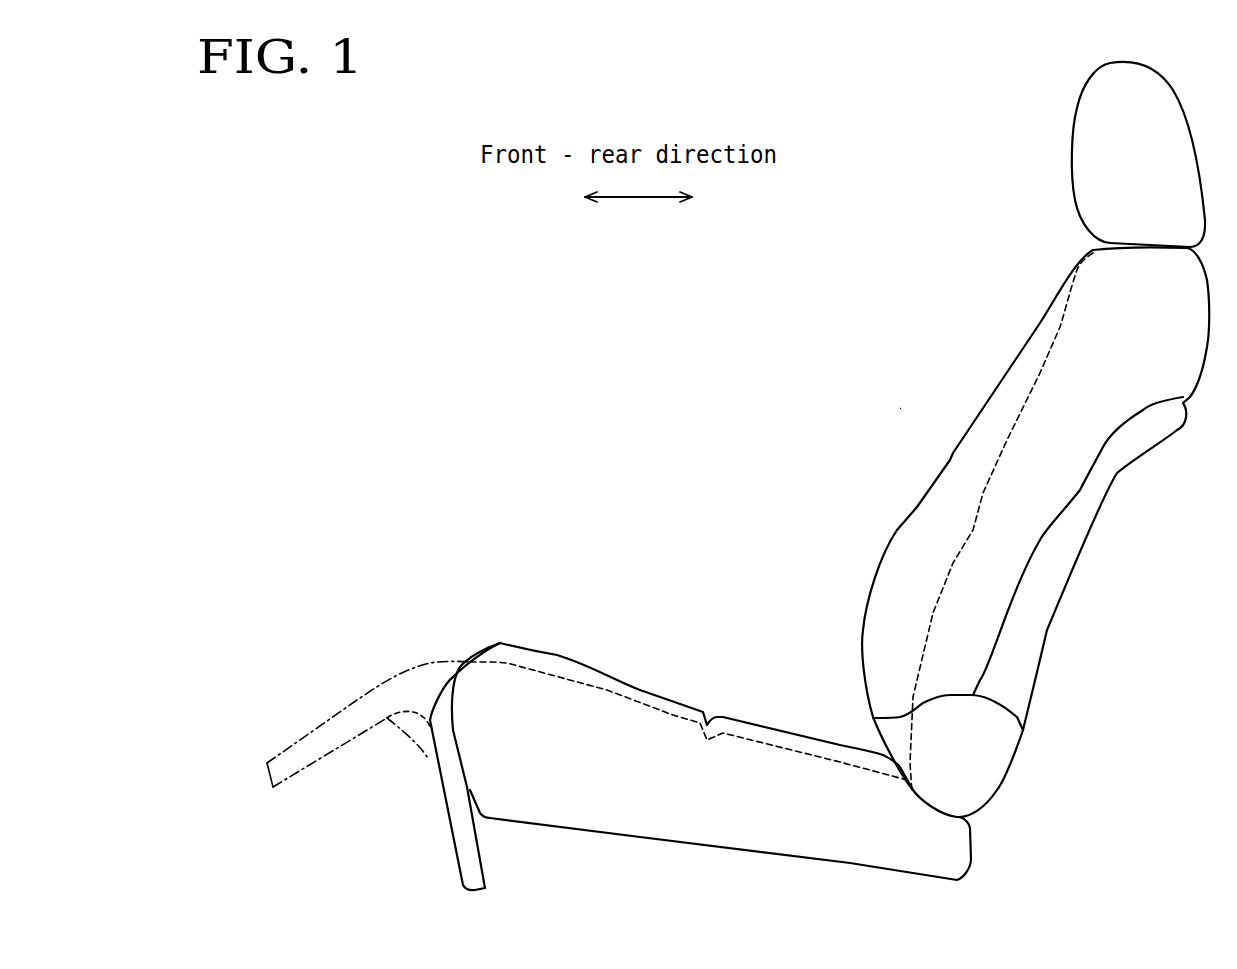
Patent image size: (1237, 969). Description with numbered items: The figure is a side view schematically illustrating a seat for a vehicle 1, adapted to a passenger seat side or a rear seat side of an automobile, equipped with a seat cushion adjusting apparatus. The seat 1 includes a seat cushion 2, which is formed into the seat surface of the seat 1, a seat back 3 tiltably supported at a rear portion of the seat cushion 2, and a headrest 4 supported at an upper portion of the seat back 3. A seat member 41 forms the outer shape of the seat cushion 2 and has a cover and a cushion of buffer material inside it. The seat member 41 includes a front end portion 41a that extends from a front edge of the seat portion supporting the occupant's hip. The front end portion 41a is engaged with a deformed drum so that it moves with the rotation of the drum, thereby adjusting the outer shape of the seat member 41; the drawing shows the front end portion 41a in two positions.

The seat for a vehicle 1 is at (900, 408).
The seat cushion 2 is at (678, 707).
The seat back 3 is at (930, 510).
The headrest 4 is at (1072, 170).
The seat member 41 is at (558, 660).
The front end portion 41a is at (440, 823).